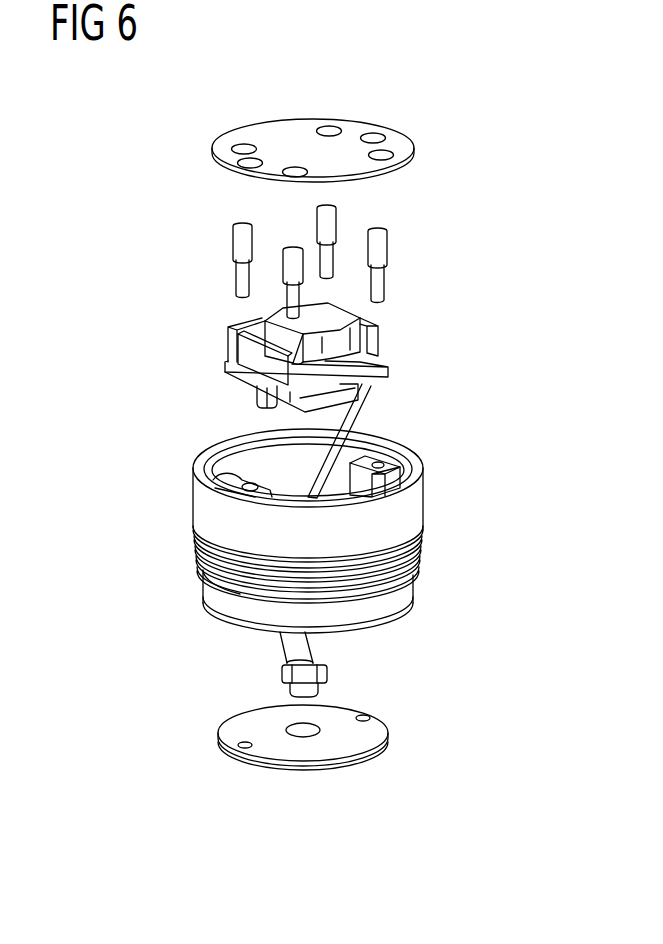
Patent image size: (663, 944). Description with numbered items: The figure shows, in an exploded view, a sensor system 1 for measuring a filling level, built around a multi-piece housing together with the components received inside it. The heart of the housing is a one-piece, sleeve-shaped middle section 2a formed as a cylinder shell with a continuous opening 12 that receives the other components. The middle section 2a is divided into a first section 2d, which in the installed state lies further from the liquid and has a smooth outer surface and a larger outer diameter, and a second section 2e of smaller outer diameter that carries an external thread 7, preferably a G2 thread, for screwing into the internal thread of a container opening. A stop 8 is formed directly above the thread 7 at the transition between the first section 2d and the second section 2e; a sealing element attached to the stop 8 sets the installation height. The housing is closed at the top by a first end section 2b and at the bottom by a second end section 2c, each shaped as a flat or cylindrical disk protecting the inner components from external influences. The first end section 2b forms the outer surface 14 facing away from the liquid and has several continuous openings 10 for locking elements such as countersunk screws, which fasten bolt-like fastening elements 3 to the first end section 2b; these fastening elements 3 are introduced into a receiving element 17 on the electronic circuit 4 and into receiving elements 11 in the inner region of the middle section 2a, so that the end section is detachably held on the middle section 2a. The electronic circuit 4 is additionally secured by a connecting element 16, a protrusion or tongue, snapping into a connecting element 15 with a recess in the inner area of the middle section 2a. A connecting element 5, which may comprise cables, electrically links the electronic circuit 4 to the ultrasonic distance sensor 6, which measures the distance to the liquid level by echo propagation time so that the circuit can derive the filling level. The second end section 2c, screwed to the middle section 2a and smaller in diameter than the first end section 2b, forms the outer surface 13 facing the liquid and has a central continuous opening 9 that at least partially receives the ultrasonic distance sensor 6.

The sensor system 1 is at (108, 291).
The middle section 2a is at (146, 522).
The first end section 2b is at (185, 154).
The second end section 2c is at (200, 731).
The first section 2d is at (423, 508).
The second section 2e is at (205, 580).
The fastening element 3 is at (415, 253).
The electronic circuit 4 is at (418, 345).
The connecting element 5 is at (360, 413).
The ultrasonic distance sensor 6 is at (320, 687).
The thread 7 is at (413, 583).
The stop 8 is at (418, 540).
The opening 9 is at (303, 733).
The openings 10 is at (381, 154).
The receiving element 11 is at (215, 476).
The continuous opening 12 is at (235, 444).
The outer surface 13 is at (360, 763).
The outer surface 14 is at (288, 128).
The connecting element 15 is at (400, 478).
The connecting element 16 is at (258, 397).
The receiving element 17 is at (390, 370).